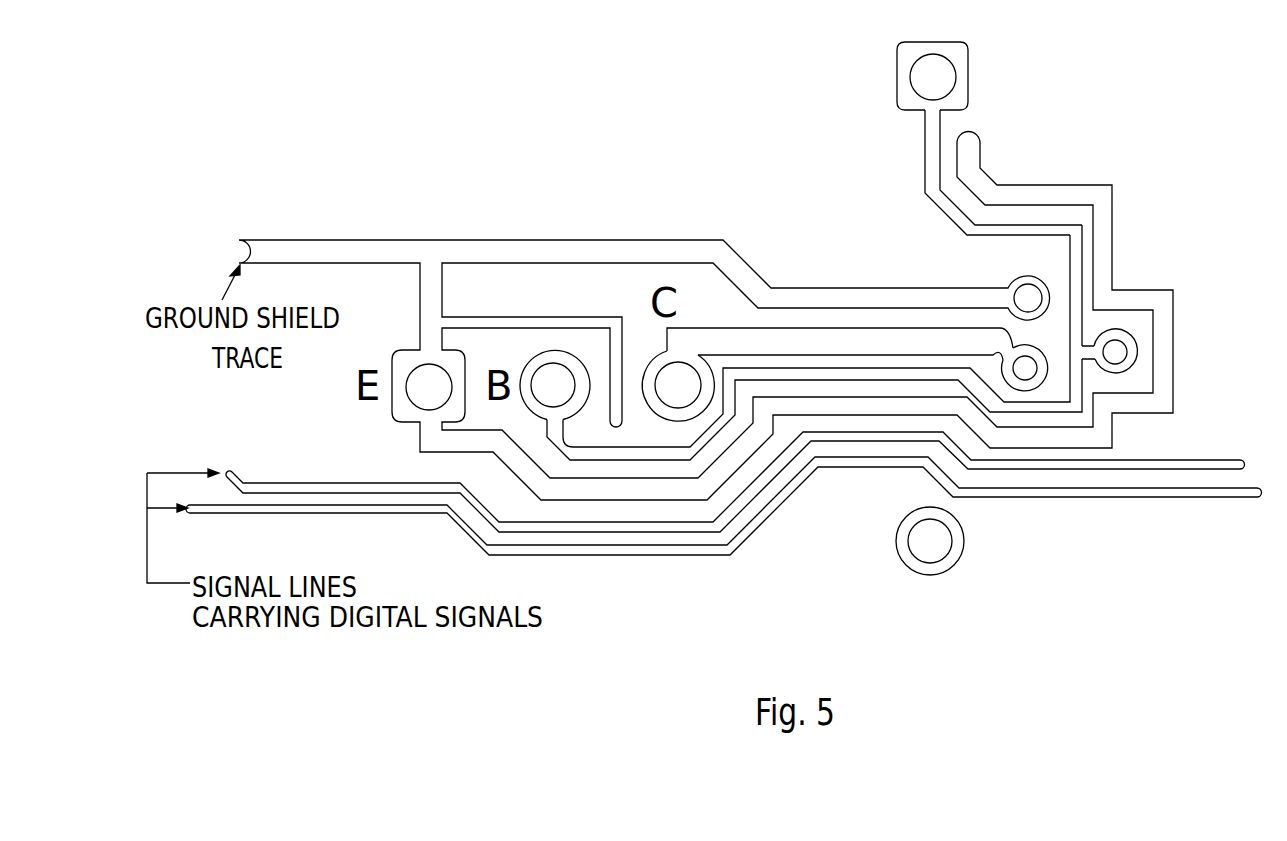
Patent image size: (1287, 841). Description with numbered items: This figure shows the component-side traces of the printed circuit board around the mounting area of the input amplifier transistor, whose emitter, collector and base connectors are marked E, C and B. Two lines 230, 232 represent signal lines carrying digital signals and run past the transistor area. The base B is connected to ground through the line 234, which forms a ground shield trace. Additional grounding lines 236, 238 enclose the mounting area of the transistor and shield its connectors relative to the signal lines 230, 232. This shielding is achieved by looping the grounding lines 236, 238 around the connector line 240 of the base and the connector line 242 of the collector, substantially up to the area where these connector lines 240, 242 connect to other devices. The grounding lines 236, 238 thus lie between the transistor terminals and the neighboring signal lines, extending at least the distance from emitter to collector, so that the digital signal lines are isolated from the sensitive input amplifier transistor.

The signal line 230 is at (1213, 458).
The signal line 232 is at (1207, 497).
The line 234 is at (315, 238).
The grounding line 236 is at (662, 238).
The grounding line 238 is at (1113, 215).
The connector line 240 is at (925, 167).
The connector line 242 is at (1042, 356).